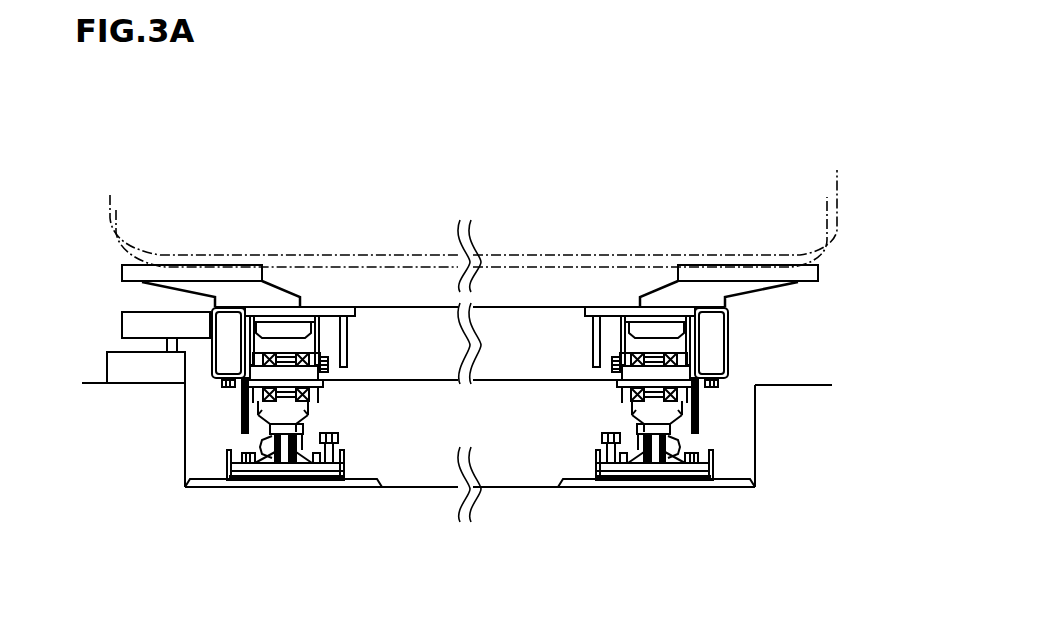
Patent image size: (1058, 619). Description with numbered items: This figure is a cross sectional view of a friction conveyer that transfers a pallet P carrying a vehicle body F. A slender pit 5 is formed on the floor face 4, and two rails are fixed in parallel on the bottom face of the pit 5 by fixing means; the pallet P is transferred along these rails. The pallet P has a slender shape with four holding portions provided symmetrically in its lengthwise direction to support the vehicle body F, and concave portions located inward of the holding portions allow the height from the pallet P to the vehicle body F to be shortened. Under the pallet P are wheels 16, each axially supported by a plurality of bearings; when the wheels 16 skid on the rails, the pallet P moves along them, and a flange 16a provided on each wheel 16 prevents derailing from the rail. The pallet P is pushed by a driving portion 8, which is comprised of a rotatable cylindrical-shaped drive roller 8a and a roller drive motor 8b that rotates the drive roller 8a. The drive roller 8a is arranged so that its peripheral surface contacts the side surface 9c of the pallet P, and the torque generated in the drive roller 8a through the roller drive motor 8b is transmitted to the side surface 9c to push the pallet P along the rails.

The floor face 4 is at (773, 385).
The slender pit 5 is at (752, 344).
The driving portion 8 is at (100, 334).
The drive roller 8a is at (122, 316).
The roller drive motor 8b is at (107, 358).
The side surface 9c is at (215, 355).
The wheel 16 is at (313, 403).
The flange 16a is at (313, 422).
The pallet P is at (546, 318).
The vehicle body F is at (475, 206).